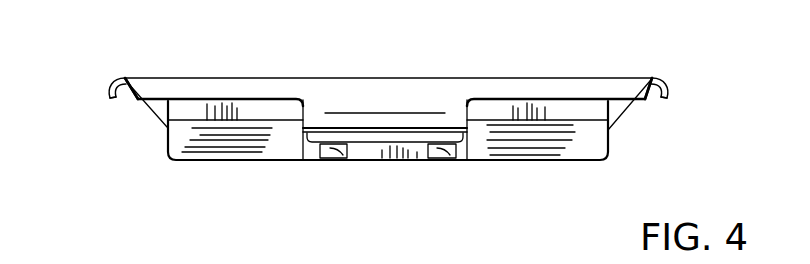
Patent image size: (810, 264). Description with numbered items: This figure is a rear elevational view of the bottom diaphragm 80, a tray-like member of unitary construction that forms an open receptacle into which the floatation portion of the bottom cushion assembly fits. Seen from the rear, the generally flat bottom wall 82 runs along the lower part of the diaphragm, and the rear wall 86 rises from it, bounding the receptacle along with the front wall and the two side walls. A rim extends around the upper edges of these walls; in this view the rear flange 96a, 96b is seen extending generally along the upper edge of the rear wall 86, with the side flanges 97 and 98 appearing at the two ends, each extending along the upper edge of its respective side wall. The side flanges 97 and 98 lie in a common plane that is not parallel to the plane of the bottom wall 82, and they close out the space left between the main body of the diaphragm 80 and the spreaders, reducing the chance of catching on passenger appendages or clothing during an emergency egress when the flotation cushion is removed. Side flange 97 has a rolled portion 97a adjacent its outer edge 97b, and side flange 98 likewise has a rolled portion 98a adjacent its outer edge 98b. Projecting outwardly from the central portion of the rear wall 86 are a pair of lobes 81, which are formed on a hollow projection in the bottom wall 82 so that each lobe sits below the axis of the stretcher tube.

The bottom diaphragm 80 is at (298, 158).
The lobes 81 is at (348, 159).
The bottom wall 82 is at (247, 138).
The rear wall 86 is at (188, 110).
The cover plate upper surface 96a is at (222, 88).
The cover plate lower surface 96b is at (283, 100).
The side flange 97 is at (143, 80).
The rolled portion 97a is at (112, 98).
The outer edge 97b is at (117, 98).
The side flange 98 is at (645, 78).
The rolled portion 98a is at (668, 85).
The outer edge 98b is at (665, 98).